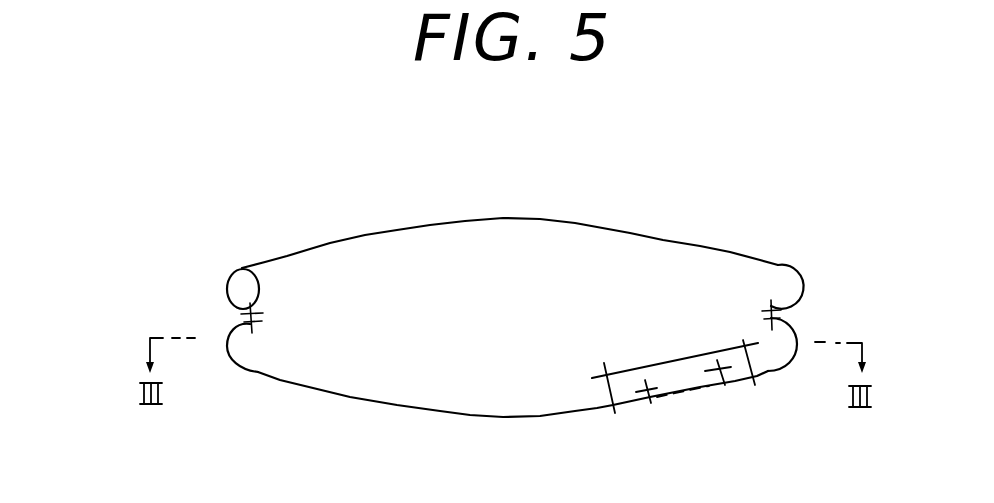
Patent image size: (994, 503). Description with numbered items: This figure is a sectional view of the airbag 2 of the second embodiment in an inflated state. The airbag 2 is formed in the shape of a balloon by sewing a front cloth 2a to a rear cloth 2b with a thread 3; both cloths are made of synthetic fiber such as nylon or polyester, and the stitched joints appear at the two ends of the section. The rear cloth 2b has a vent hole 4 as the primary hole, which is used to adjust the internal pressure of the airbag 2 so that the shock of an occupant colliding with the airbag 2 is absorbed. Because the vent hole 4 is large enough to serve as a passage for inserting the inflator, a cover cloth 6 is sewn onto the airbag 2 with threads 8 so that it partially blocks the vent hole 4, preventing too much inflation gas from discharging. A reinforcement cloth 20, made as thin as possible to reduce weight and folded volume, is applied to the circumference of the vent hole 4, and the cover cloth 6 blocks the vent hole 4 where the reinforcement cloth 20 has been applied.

The airbag 2 is at (494, 320).
The front cloth 2a is at (732, 252).
The rear cloth 2b is at (312, 390).
The thread 3 is at (242, 268).
The cover cloth 6 is at (687, 355).
The threads 8 is at (755, 378).
The reinforcement cloth 20 is at (647, 385).
The vent hole 4 is at (700, 388).